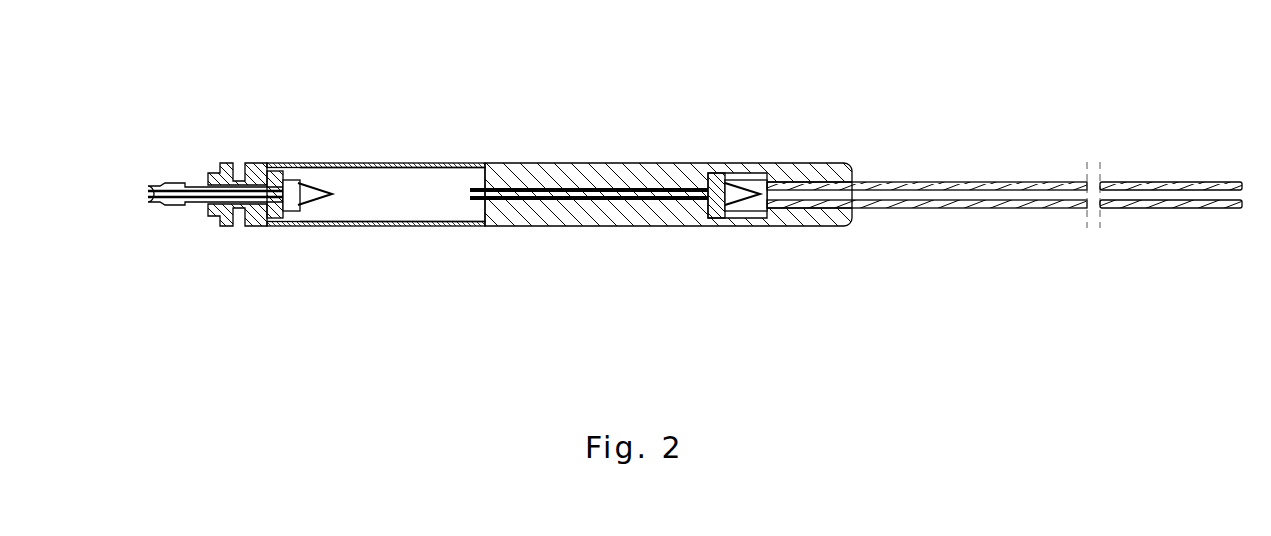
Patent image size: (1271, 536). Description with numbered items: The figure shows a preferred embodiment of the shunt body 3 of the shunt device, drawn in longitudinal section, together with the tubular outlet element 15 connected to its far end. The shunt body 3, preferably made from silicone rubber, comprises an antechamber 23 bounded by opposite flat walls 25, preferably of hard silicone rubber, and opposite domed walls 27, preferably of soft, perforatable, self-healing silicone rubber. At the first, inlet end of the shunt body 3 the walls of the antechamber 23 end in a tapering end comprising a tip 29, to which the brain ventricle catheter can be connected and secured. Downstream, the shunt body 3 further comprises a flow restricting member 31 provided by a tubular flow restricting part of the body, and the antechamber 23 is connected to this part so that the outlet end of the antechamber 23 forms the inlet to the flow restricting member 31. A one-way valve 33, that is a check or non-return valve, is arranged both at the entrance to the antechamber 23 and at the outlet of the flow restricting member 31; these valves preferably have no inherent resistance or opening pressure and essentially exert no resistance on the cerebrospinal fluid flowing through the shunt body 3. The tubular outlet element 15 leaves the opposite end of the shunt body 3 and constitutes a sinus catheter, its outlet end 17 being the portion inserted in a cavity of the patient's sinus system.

The shunt body 3 is at (537, 218).
The tubular outlet element 15 is at (943, 184).
The outlet end 17 is at (1127, 184).
The antechamber 23 is at (411, 188).
The flat walls 25 is at (432, 163).
The domed walls 27 is at (357, 190).
The tip 29 is at (168, 185).
The flow restricting member 31 is at (592, 187).
The one-way valve 33 is at (738, 181).